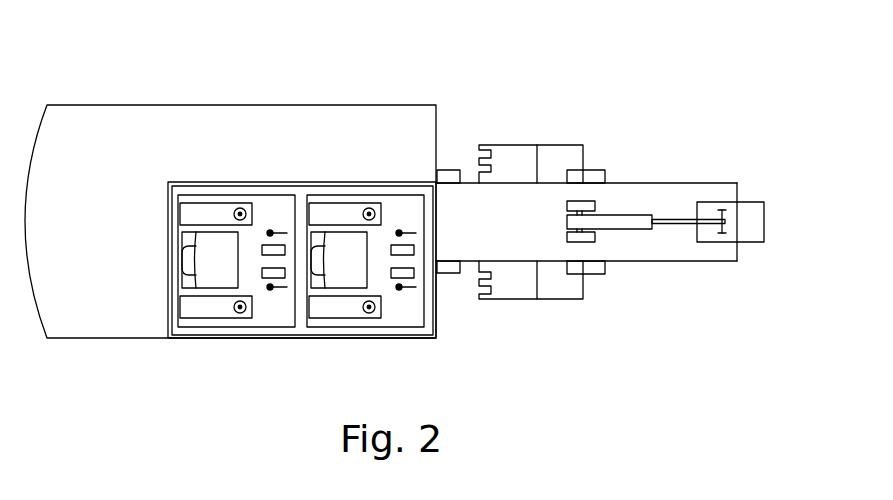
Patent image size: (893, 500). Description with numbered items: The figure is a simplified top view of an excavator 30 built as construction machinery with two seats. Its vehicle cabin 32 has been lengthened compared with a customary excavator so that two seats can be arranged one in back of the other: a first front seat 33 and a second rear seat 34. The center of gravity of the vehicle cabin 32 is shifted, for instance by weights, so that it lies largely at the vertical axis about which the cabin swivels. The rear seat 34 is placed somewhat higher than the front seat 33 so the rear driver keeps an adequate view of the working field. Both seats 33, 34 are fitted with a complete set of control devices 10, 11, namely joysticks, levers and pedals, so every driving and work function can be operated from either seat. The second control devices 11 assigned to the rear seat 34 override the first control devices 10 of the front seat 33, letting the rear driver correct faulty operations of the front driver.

The excavator 30 is at (438, 86).
The vehicle cabin 32 is at (212, 190).
The first front seat 33 is at (345, 268).
The second rear seat 34 is at (221, 268).
The first control devices 10 is at (400, 228).
The second control devices 11 is at (272, 228).